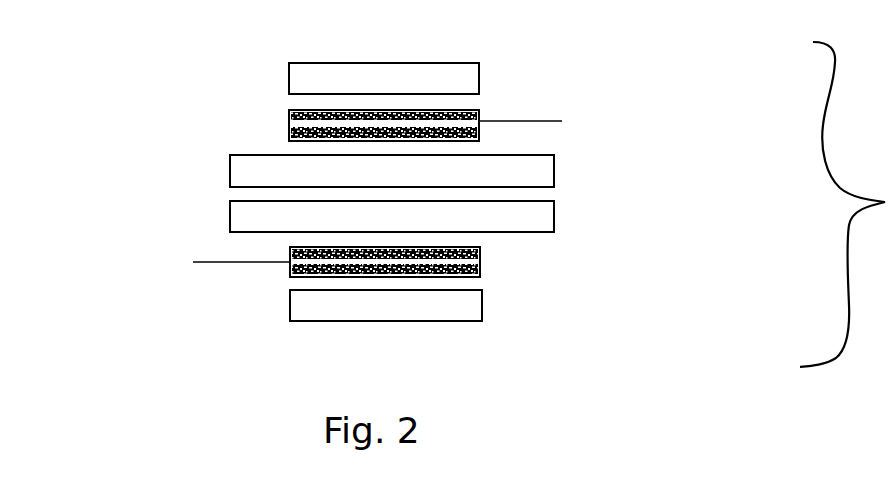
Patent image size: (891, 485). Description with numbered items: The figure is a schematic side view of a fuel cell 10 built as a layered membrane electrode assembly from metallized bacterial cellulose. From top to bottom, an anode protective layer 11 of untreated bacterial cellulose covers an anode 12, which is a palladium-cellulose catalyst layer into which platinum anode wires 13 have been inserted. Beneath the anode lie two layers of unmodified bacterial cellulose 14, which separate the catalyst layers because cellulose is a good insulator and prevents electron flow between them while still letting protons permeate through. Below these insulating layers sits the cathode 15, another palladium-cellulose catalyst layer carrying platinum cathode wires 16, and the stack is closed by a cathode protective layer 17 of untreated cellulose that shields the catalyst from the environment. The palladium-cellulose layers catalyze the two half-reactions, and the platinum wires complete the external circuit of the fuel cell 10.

The fuel cell 10 is at (650, 274).
The anode protective layer 11 is at (272, 78).
The anode 12 is at (273, 125).
The anode wires 13 is at (568, 107).
The unmodified bacterial cellulose layers 14 is at (230, 173).
The cathode 15 is at (498, 262).
The cathode wires 16 is at (192, 278).
The cathode protective layer 17 is at (498, 308).